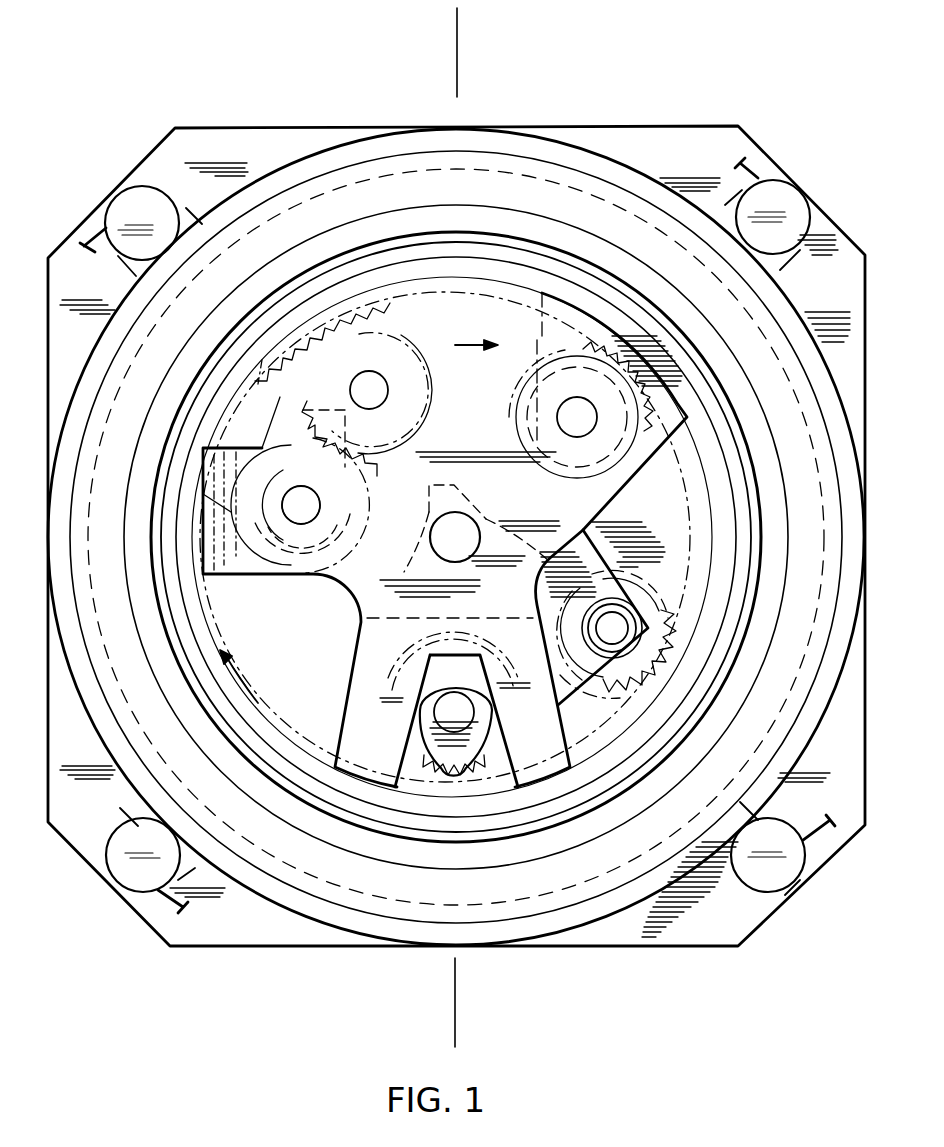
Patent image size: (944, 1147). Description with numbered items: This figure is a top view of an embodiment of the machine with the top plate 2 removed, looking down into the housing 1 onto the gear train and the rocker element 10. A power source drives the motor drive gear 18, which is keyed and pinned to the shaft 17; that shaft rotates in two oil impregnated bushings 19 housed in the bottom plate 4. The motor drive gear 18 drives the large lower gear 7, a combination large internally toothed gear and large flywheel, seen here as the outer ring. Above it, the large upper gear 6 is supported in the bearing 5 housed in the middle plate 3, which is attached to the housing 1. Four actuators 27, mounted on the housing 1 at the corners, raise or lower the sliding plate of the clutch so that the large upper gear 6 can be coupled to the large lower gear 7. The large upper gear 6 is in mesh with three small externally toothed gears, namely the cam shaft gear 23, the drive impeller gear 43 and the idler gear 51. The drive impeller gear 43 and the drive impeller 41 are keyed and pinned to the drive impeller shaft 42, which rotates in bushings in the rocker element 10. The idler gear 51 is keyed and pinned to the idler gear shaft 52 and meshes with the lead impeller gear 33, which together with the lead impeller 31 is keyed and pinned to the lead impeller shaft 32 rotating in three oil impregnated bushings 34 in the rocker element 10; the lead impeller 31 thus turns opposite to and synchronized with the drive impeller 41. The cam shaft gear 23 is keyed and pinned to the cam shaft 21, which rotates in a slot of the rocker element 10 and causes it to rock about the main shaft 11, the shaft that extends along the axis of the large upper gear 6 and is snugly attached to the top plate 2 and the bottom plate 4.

The housing 1 is at (672, 885).
The top plate 2 is at (476, 19).
The middle plate 3 is at (247, 850).
The bottom plate 4 is at (765, 927).
The bearing 5 is at (300, 820).
The large upper gear 6 is at (277, 752).
The large lower gear 7 is at (623, 866).
The rocker element 10 is at (547, 790).
The main shaft 11 is at (469, 522).
The shaft 17 is at (637, 632).
The motor drive gear 18 is at (607, 700).
The oil impregnated bushings 19 is at (635, 657).
The cam shaft 21 is at (452, 724).
The cam shaft gear 23 is at (380, 760).
The actuators 27 is at (783, 190).
The lead impeller 31 is at (262, 360).
The lead impeller shaft 32 is at (304, 527).
The lead impeller gear 33 is at (203, 449).
The oil impregnated bushings 34 is at (304, 527).
The drive impeller 41 is at (668, 328).
The drive impeller shaft 42 is at (557, 417).
The drive impeller gear 43 is at (552, 353).
The idler gear 51 is at (410, 290).
The idler gear shaft 52 is at (386, 390).